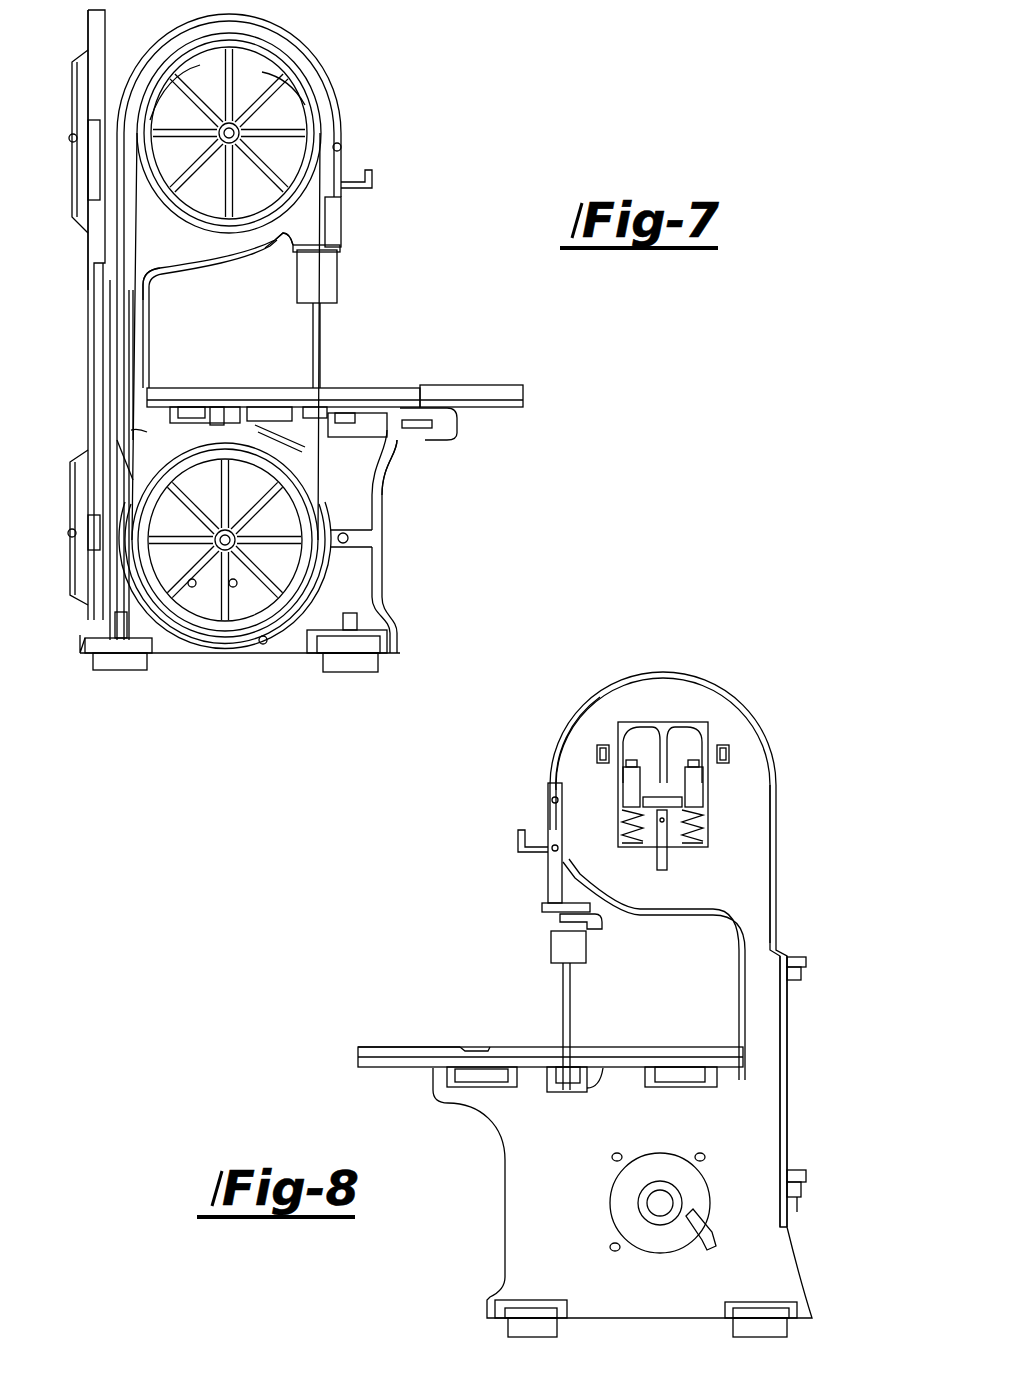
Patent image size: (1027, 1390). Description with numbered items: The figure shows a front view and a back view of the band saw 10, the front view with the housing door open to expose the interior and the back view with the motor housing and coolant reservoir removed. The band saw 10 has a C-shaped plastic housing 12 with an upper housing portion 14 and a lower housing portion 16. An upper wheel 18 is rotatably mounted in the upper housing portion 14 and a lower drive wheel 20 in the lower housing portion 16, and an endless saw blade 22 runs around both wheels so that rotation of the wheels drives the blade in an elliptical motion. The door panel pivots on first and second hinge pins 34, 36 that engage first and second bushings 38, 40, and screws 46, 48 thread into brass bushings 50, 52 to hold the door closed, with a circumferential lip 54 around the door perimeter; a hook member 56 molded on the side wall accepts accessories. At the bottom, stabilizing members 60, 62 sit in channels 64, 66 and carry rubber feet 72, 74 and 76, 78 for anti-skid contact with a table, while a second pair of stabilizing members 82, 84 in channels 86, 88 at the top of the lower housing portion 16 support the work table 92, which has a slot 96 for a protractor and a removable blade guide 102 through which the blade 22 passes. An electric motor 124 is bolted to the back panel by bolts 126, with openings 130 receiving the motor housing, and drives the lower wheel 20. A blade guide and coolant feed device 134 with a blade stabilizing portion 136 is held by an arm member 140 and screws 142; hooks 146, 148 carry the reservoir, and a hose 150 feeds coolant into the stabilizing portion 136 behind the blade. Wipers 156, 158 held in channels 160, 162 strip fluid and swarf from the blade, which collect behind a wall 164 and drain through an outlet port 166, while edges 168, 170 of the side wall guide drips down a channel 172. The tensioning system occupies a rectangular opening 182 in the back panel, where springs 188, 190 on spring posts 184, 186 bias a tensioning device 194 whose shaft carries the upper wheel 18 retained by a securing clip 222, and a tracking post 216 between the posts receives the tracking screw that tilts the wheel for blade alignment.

In FIG. 8, the band saw 10 is at (690, 606).
In FIG. 8, the housing 12 is at (777, 758).
In FIG. 8, the upper housing portion 14 is at (771, 888).
In FIG. 8, the lower housing portion 16 is at (527, 1187).
In FIG. 7, the upper wheel 18 is at (288, 87).
In FIG. 8, the upper wheel 18 is at (682, 723).
In FIG. 7, the lower drive wheel 20 is at (213, 622).
In FIG. 7, the saw blade 22 is at (321, 345).
In FIG. 8, the saw blade 22 is at (571, 1012).
In FIG. 8, the first hinge pin 34 is at (793, 997).
In FIG. 8, the second hinge pin 36 is at (792, 1195).
In FIG. 8, the first bushing 38 is at (802, 960).
In FIG. 8, the second bushing 40 is at (802, 1177).
In FIG. 7, the screw 46 is at (70, 140).
In FIG. 7, the screw 48 is at (68, 533).
In FIG. 7, the threaded brass bushing 50 is at (347, 147).
In FIG. 7, the threaded brass bushing 52 is at (350, 540).
In FIG. 8, the circumferential lip 54 is at (598, 693).
In FIG. 7, the hook member 56 is at (372, 190).
In FIG. 8, the hook member 56 is at (520, 847).
In FIG. 7, the stabilizing member 60 is at (93, 637).
In FIG. 8, the stabilizing member 60 is at (748, 1315).
In FIG. 7, the stabilizing member 62 is at (385, 653).
In FIG. 8, the stabilizing member 62 is at (543, 1310).
In FIG. 7, the channel 64 is at (87, 652).
In FIG. 7, the channel 66 is at (367, 670).
In FIG. 7, the rubber foot 72 is at (120, 670).
In FIG. 8, the rubber foot 74 is at (745, 1328).
In FIG. 7, the rubber foot 76 is at (372, 660).
In FIG. 8, the rubber foot 78 is at (518, 1327).
In FIG. 7, the stabilizing member 82 is at (197, 410).
In FIG. 8, the stabilizing member 82 is at (700, 1073).
In FIG. 7, the stabilizing member 84 is at (427, 425).
In FIG. 8, the stabilizing member 84 is at (475, 1073).
In FIG. 7, the channel 86 is at (218, 425).
In FIG. 7, the channel 88 is at (390, 450).
In FIG. 7, the work table 92 is at (492, 384).
In FIG. 8, the work table 92 is at (398, 1045).
In FIG. 7, the slot 96 is at (407, 387).
In FIG. 8, the slot 96 is at (473, 1043).
In FIG. 8, the blade guide 102 is at (597, 1083).
In FIG. 8, the electric motor 124 is at (655, 1237).
In FIG. 7, the bolts 126 is at (236, 587).
In FIG. 7, the openings 130 is at (192, 587).
In FIG. 8, the openings 130 is at (700, 1152).
In FIG. 7, the blade guide and coolant feed device 134 is at (344, 291).
In FIG. 8, the blade guide and coolant feed device 134 is at (548, 949).
In FIG. 7, the blade stabilizing portion 136 is at (330, 296).
In FIG. 8, the blade stabilizing portion 136 is at (552, 977).
In FIG. 7, the arm member 140 is at (343, 222).
In FIG. 8, the arm member 140 is at (553, 883).
In FIG. 8, the screws 142 is at (553, 800).
In FIG. 8, the hook 146 is at (597, 755).
In FIG. 8, the hook 148 is at (730, 753).
In FIG. 8, the hose 150 is at (595, 930).
In FIG. 7, the wiper 156 is at (143, 430).
In FIG. 7, the wiper 158 is at (273, 433).
In FIG. 7, the channel 160 is at (133, 480).
In FIG. 7, the channel 162 is at (322, 438).
In FIG. 7, the wall 164 is at (265, 645).
In FIG. 7, the outlet port 166 is at (230, 655).
In FIG. 7, the edge 168 is at (282, 255).
In FIG. 7, the edge 170 is at (148, 278).
In FIG. 7, the channel 172 is at (125, 355).
In FIG. 8, the rectangular opening 182 is at (705, 835).
In FIG. 7, the spring post 184 is at (262, 80).
In FIG. 8, the spring post 184 is at (633, 773).
In FIG. 7, the spring post 186 is at (200, 72).
In FIG. 8, the spring post 186 is at (703, 752).
In FIG. 8, the spring 188 is at (620, 840).
In FIG. 8, the spring 190 is at (692, 847).
In FIG. 8, the tensioning device 194 is at (707, 803).
In FIG. 8, the tracking post 216 is at (663, 870).
In FIG. 7, the securing clip 222 is at (239, 132).